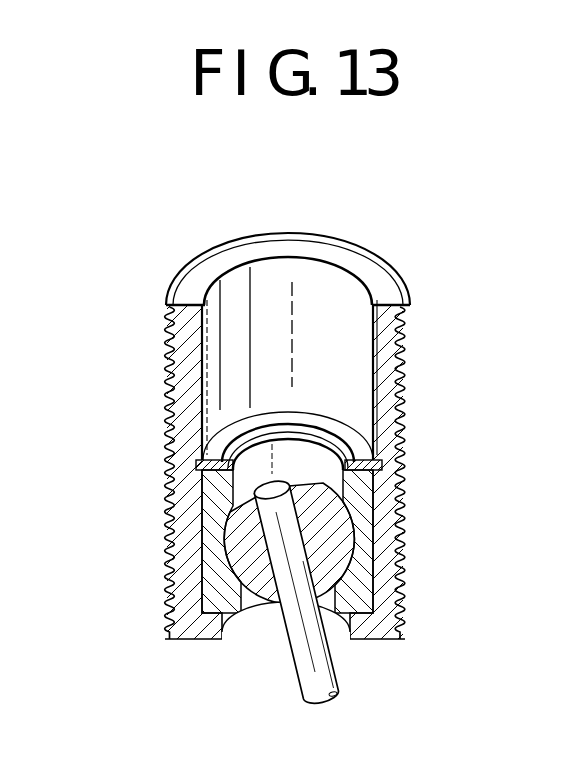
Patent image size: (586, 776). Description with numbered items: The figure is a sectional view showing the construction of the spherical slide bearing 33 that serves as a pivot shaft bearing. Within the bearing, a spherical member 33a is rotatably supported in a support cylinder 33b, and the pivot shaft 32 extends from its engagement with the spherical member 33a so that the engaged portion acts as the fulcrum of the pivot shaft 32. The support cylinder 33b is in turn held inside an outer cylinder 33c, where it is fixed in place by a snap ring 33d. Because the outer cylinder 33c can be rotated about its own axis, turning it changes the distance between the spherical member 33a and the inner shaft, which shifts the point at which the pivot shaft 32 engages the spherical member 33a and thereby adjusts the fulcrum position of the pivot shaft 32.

The pivot shaft 32 is at (300, 662).
The spherical slide bearing 33 is at (401, 271).
The spherical member 33a is at (348, 532).
The support cylinder 33b is at (350, 490).
The outer cylinder 33c is at (405, 350).
The snap ring 33d is at (222, 435).